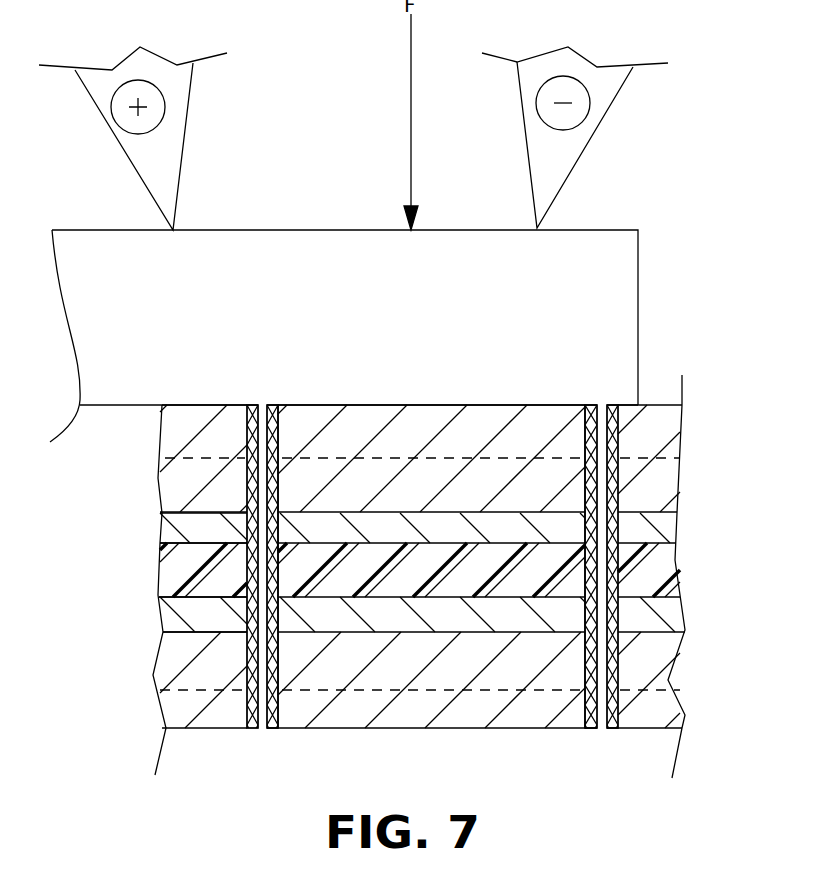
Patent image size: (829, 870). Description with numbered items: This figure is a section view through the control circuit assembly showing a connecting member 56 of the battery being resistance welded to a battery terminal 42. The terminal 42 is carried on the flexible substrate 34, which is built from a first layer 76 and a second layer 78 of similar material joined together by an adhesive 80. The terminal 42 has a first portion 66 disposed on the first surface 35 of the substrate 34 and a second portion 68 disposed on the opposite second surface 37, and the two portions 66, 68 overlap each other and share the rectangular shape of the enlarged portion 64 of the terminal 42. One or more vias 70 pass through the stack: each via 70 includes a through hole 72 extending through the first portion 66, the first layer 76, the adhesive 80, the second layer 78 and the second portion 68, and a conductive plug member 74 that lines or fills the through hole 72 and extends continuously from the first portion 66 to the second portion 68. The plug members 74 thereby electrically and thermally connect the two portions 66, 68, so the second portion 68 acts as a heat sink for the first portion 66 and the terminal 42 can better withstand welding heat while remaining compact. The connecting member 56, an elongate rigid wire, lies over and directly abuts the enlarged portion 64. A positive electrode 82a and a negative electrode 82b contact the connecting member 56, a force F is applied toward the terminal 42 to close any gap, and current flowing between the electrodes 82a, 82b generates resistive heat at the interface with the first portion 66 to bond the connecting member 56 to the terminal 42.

The flexible substrate 34 is at (399, 584).
The first surface 35 is at (652, 507).
The second surface 37 is at (670, 660).
The battery terminal 42 is at (540, 403).
The connecting member 56 is at (263, 275).
The enlarged portion 64 is at (335, 438).
The first portion 66 is at (475, 437).
The second portion 68 is at (525, 717).
The via 70 is at (248, 433).
The through hole 72 is at (280, 415).
The plug member 74 is at (247, 492).
The first layer 76 is at (173, 532).
The second layer 78 is at (163, 620).
The adhesive 80 is at (173, 560).
The positive electrode 82a is at (180, 180).
The negative electrode 82b is at (560, 190).